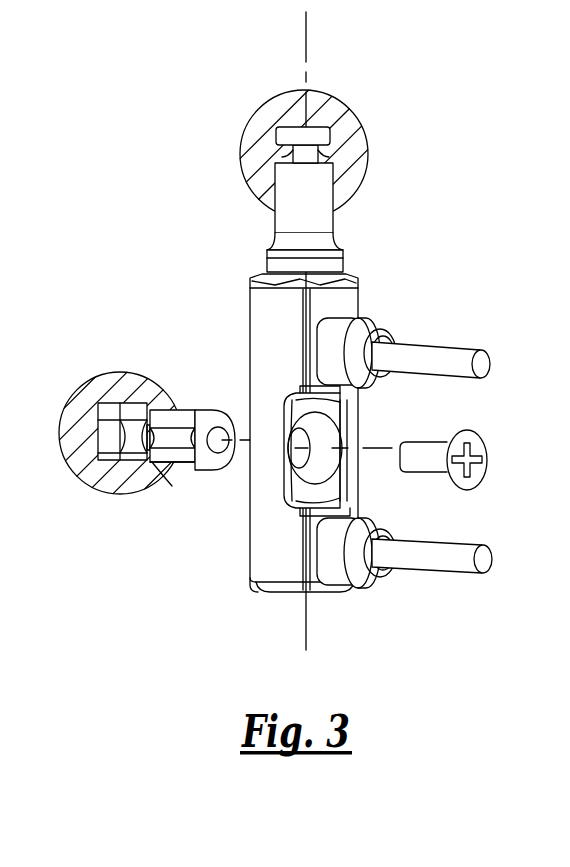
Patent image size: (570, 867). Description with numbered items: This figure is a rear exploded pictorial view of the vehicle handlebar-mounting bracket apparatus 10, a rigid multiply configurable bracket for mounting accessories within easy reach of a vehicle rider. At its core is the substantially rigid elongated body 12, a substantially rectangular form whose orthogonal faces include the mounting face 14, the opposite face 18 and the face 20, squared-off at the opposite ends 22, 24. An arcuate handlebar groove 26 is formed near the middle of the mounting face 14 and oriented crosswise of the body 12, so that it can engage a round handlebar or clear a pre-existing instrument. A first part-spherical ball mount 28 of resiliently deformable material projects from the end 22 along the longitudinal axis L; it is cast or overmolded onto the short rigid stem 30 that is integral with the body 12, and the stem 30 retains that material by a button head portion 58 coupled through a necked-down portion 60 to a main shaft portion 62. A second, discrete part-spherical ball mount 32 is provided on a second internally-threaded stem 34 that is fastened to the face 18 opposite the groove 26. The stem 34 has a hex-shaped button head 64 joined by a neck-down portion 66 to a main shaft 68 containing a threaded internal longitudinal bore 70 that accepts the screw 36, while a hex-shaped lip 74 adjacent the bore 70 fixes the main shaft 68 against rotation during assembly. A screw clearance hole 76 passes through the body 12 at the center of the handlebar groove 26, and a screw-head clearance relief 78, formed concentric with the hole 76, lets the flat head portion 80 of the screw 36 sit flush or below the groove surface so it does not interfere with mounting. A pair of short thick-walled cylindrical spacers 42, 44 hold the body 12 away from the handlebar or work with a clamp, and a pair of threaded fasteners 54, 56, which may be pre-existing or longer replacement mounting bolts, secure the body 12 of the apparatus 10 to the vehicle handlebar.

The longitudinal axis L is at (306, 46).
The vehicle handlebar-mounting bracket apparatus 10 is at (432, 188).
The body 12 is at (326, 593).
The mounting face 14 is at (358, 314).
The face 18 is at (250, 310).
The face 20 is at (277, 365).
The end 22 is at (258, 278).
The end 24 is at (280, 590).
The handlebar groove 26 is at (342, 496).
The first part-spherical ball mount 28 is at (358, 122).
The stem 30 is at (342, 254).
The second part-spherical ball mount 32 is at (100, 388).
The stem 34 is at (172, 488).
The screw 36 is at (418, 444).
The spacer 42 is at (395, 326).
The spacer 44 is at (395, 520).
The threaded fastener 54 is at (460, 345).
The threaded fastener 56 is at (452, 540).
The button head portion 58 is at (274, 129).
The necked-down portion 60 is at (280, 156).
The main shaft portion 62 is at (280, 222).
The hex-shaped button head 64 is at (125, 400).
The neck-down portion 66 is at (133, 420).
The main shaft 68 is at (184, 412).
The threaded internal longitudinal bore 70 is at (222, 478).
The hex-shaped lip 74 is at (203, 474).
The screw clearance hole 76 is at (344, 424).
The screw-head clearance relief 78 is at (332, 444).
The flat head portion 80 is at (470, 438).